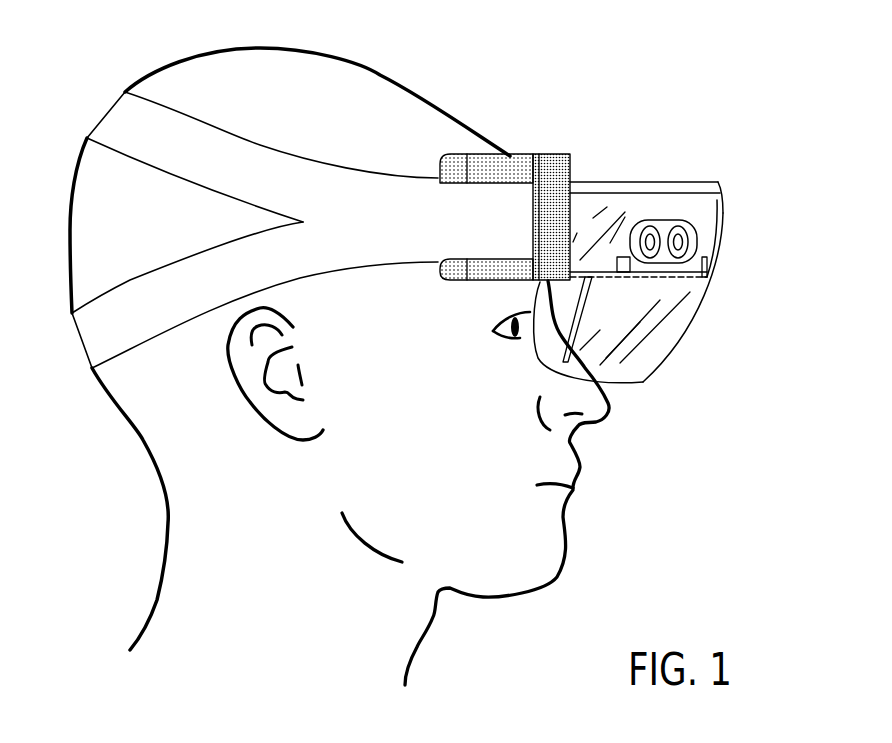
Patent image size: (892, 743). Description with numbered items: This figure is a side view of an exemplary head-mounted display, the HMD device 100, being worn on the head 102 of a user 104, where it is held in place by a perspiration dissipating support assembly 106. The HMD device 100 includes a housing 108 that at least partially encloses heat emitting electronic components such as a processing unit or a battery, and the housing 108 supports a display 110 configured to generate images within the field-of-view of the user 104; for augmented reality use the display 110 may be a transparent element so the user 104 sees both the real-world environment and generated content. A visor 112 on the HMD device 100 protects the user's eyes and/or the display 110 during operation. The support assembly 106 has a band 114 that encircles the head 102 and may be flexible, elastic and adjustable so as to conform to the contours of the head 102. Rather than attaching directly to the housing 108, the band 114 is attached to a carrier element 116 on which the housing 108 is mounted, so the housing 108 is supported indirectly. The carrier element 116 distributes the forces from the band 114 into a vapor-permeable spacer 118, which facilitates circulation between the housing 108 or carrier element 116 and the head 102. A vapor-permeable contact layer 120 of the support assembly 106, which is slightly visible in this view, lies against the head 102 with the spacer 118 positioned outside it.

The HMD device 100 is at (699, 116).
The head 102 is at (253, 104).
The user 104 is at (648, 427).
The perspiration dissipating support assembly 106 is at (521, 152).
The housing 108 is at (720, 188).
The display 110 is at (580, 295).
The visor 112 is at (645, 385).
The band 114 is at (356, 232).
The carrier element 116 is at (572, 156).
The vapor-permeable spacer 118 is at (480, 155).
The vapor-permeable contact layer 120 is at (438, 166).